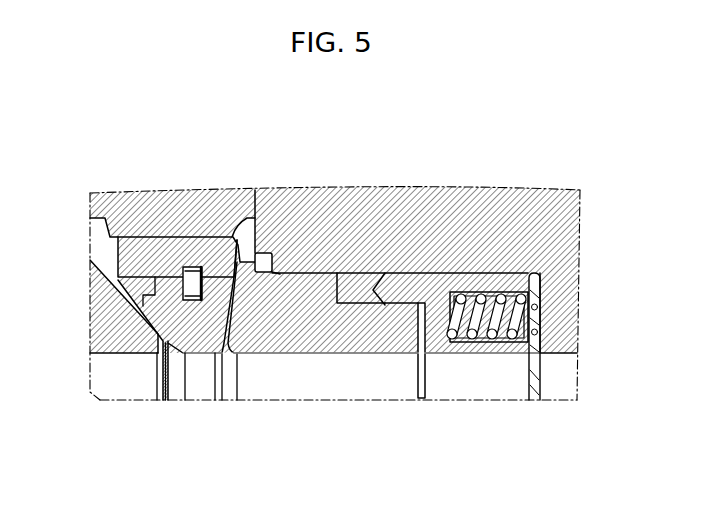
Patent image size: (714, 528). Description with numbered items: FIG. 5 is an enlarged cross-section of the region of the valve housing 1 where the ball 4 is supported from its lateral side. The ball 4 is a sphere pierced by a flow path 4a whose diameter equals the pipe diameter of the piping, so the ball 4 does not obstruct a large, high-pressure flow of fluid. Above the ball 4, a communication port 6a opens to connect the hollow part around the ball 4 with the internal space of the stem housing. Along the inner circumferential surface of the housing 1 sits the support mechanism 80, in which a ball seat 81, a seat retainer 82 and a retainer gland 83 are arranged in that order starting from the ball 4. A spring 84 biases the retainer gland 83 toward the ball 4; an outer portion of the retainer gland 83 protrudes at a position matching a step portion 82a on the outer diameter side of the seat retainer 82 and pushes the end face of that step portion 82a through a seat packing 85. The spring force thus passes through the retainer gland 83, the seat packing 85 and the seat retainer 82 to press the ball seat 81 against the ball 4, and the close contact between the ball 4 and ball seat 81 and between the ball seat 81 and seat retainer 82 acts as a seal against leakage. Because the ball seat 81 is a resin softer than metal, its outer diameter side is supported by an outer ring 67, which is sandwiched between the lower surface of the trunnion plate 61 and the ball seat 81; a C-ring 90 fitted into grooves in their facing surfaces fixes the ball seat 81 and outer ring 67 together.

The housing 1 is at (313, 197).
The trunnion plate 61 is at (147, 195).
The outer ring 67 is at (190, 247).
The communication port 6a is at (243, 217).
The C-ring 90 is at (183, 282).
The ball 4 is at (95, 314).
The flow path 4a is at (123, 355).
The support mechanism 80 is at (183, 447).
The ball seat 81 is at (201, 343).
The seat retainer 82 is at (257, 348).
The step portion 82a is at (345, 296).
The retainer gland 83 is at (441, 310).
The spring 84 is at (498, 342).
The seat packing 85 is at (363, 296).